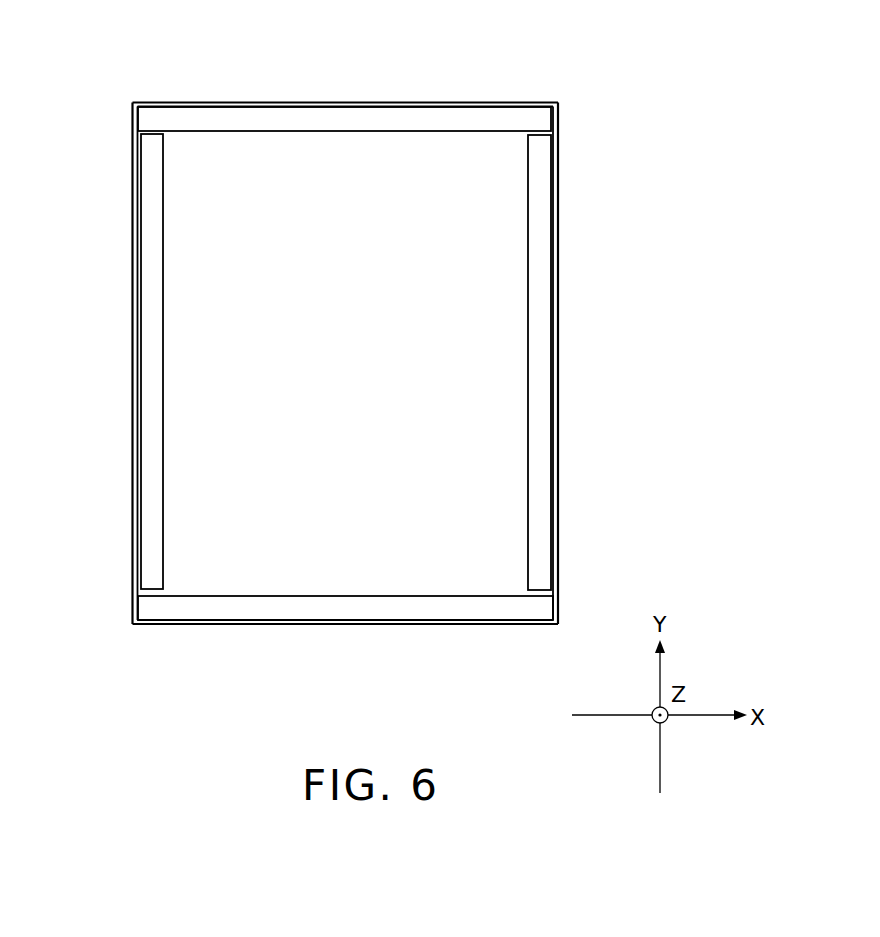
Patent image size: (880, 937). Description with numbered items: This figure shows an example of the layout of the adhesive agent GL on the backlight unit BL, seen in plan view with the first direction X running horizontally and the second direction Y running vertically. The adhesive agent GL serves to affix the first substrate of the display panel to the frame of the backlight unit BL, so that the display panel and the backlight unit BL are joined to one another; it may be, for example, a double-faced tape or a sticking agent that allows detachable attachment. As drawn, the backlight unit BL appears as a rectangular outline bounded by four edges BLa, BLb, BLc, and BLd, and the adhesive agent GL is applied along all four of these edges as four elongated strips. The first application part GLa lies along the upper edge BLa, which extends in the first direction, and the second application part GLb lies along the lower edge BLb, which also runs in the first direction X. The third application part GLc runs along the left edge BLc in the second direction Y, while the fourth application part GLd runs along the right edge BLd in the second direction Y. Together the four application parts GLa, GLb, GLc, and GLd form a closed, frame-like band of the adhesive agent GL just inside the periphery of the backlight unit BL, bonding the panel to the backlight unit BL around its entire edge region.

The backlight unit BL is at (346, 356).
The edge of the backlight unit BLa is at (290, 108).
The edge of the backlight unit BLb is at (395, 625).
The edge of the backlight unit BLc is at (132, 280).
The edge of the backlight unit BLd is at (559, 262).
The adhesive agent GL is at (345, 350).
The first application part GLa is at (215, 125).
The second application part GLb is at (292, 608).
The third application part GLc is at (155, 352).
The fourth application part GLd is at (540, 353).